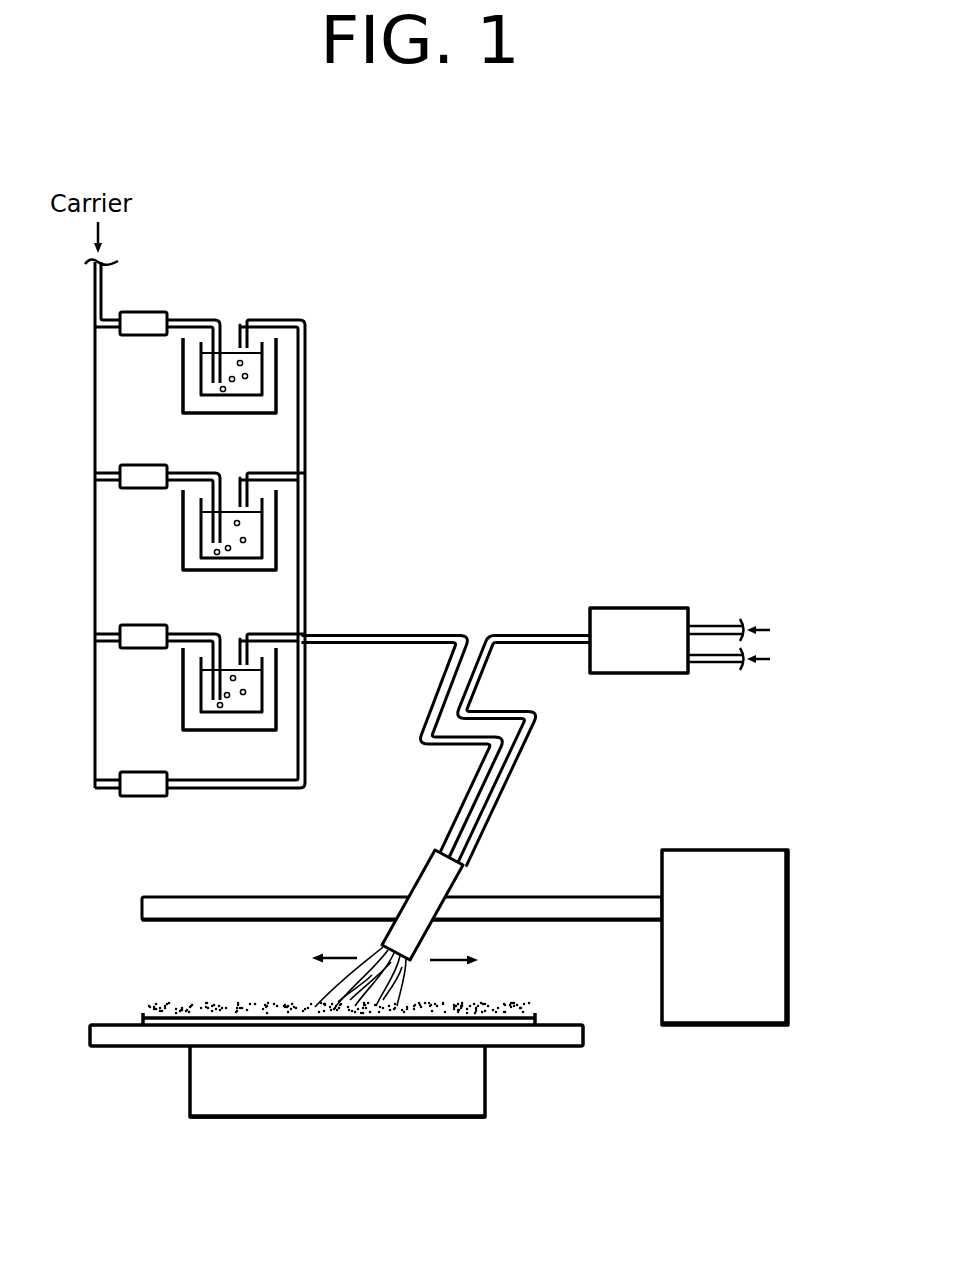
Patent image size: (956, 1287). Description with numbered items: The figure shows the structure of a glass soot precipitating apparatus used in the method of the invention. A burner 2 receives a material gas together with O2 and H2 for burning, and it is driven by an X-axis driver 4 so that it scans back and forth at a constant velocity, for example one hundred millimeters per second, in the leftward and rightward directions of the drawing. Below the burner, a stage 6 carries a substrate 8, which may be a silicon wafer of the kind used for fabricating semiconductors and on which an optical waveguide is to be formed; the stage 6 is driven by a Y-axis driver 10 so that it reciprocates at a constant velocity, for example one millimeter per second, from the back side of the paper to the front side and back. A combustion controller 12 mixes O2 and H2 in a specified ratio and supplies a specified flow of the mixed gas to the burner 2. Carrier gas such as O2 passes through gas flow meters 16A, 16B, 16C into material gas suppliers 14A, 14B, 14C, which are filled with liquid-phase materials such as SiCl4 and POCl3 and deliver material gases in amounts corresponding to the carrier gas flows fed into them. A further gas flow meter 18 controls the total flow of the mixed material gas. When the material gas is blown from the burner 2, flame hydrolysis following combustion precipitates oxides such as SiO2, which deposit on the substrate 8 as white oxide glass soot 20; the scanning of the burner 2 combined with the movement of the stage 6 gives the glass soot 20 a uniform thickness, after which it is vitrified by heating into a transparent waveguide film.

The burner 2 is at (463, 876).
The X-axis driver 4 is at (788, 883).
The stage 6 is at (585, 1040).
The substrate 8 is at (537, 1016).
The Y-axis driver 10 is at (486, 1090).
The combustion controller 12 is at (630, 608).
The material gas supplier 14A is at (230, 414).
The material gas supplier 14B is at (232, 572).
The material gas supplier 14C is at (237, 731).
The gas flow meter 16A is at (147, 312).
The gas flow meter 16B is at (135, 465).
The gas flow meter 16C is at (140, 625).
The gas flow meter 18 is at (135, 772).
The oxide glass soot 20 is at (507, 1008).